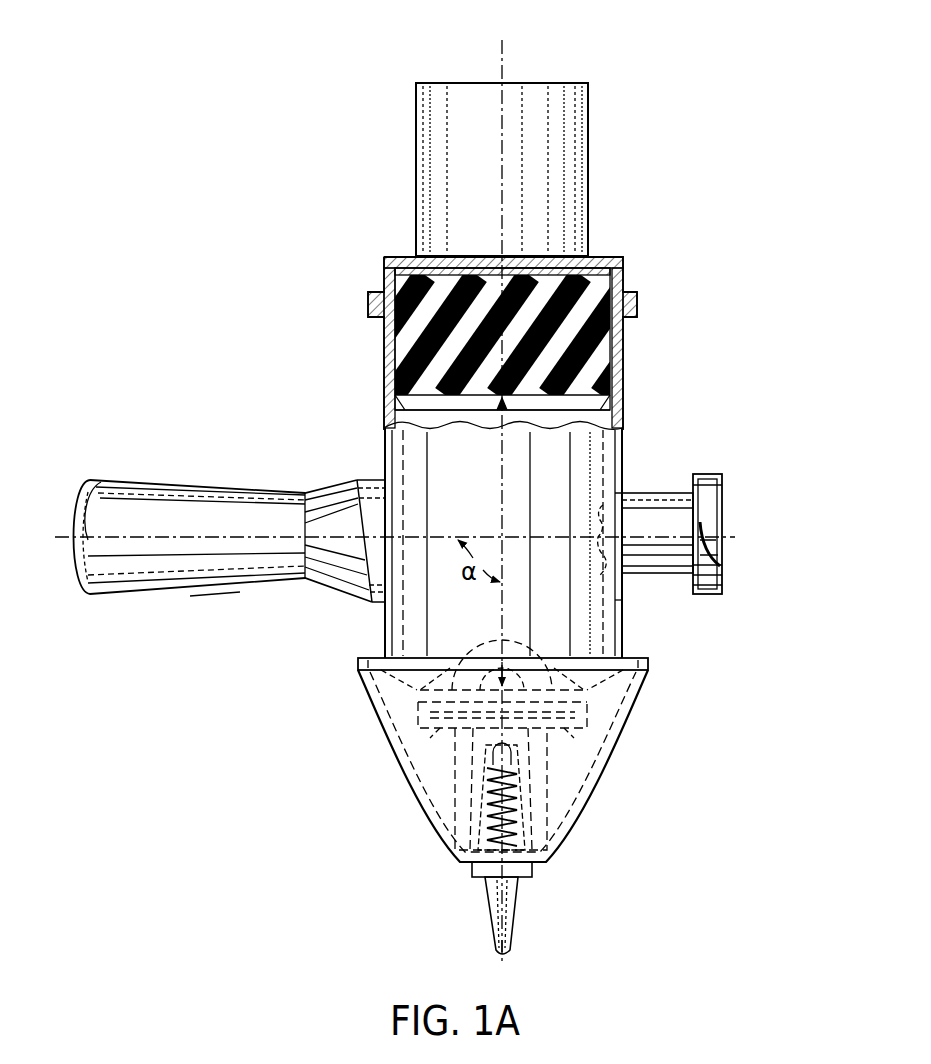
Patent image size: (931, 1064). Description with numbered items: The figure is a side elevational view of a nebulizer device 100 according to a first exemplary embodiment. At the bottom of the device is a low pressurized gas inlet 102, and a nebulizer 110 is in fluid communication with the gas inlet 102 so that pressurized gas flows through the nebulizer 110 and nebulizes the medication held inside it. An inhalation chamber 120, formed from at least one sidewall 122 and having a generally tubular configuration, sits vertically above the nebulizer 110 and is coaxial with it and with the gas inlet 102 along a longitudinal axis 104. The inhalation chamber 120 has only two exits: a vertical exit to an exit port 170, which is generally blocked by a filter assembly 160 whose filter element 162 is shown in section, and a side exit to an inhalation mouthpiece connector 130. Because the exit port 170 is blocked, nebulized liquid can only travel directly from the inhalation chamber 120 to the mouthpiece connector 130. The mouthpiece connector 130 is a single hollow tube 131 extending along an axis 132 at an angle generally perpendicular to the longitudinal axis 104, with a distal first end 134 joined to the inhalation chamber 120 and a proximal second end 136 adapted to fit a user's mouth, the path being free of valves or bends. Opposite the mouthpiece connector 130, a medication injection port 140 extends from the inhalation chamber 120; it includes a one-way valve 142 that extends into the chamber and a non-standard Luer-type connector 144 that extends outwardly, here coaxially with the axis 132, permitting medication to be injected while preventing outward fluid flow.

The nebulizer device 100 is at (656, 78).
The low pressurized gas inlet 102 is at (488, 898).
The longitudinal axis 104 is at (505, 942).
The nebulizer 110 is at (618, 738).
The inhalation chamber 120 is at (623, 440).
The sidewall 122 is at (626, 600).
The inhalation mouthpiece connector 130 is at (228, 487).
The hollow tube 131 is at (192, 596).
The axis 132 is at (72, 542).
The distal first end 134 is at (372, 478).
The proximal second end 136 is at (86, 528).
The medication injection port 140 is at (705, 473).
The one-way valve 142 is at (628, 492).
The connector 144 is at (722, 562).
The filter assembly 160 is at (636, 300).
The filter element 162 is at (598, 358).
The exit port 170 is at (627, 268).